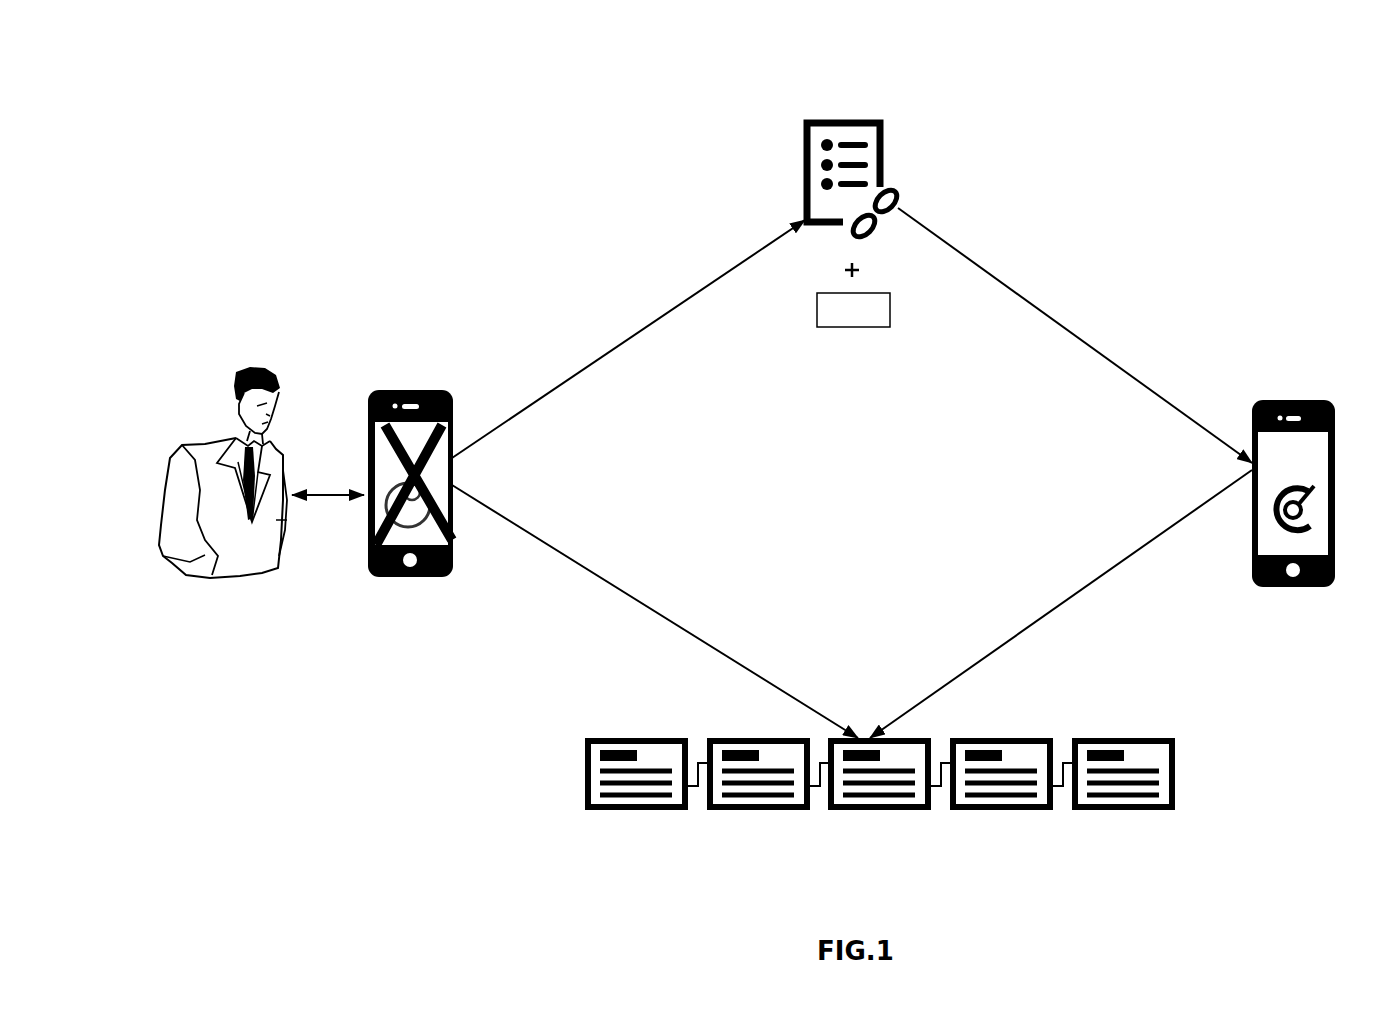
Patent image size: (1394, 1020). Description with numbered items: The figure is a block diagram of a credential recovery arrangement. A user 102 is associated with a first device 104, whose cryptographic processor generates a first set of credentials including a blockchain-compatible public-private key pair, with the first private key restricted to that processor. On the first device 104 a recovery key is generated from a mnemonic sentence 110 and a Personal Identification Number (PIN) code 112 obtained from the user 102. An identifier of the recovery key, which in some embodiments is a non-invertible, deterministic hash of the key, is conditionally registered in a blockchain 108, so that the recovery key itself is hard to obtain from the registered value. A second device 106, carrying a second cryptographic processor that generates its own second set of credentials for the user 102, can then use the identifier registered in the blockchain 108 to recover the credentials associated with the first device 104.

The user 102 is at (240, 576).
The first device 104 is at (410, 390).
The second device 106 is at (1298, 400).
The blockchain 108 is at (895, 810).
The mnemonic sentence 110 is at (857, 123).
The Personal Identification Number (PIN) code 112 is at (890, 308).